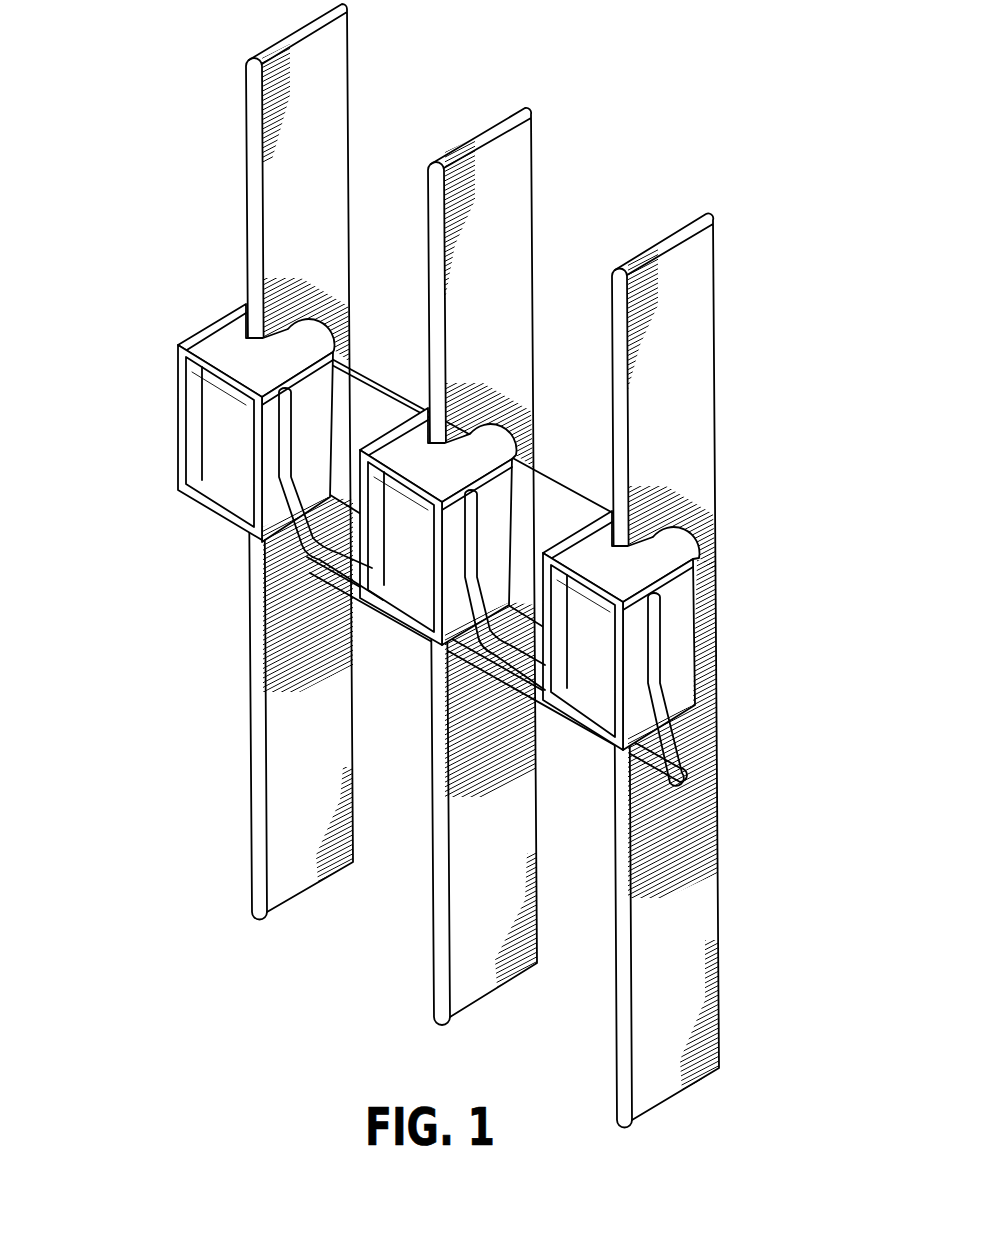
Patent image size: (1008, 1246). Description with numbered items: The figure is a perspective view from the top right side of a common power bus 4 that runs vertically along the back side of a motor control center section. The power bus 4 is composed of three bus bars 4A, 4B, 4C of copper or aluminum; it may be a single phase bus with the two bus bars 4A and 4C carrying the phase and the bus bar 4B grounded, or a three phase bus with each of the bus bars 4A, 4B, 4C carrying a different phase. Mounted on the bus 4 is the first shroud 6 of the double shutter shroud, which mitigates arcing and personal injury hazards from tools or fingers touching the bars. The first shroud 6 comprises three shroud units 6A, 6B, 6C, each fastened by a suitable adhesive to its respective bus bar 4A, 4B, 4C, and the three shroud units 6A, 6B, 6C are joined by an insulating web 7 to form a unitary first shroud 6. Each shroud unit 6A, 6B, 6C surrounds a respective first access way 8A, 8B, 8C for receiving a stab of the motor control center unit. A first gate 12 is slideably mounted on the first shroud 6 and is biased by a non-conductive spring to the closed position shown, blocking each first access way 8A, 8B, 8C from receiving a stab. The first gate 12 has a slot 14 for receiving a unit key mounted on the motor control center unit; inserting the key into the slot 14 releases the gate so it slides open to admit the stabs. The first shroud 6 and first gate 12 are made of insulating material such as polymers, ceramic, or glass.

The power bus 4 is at (485, 566).
The bus bar 4A is at (260, 722).
The bus bar 4B is at (487, 168).
The bus bar 4C is at (697, 403).
The first shroud 6 is at (468, 467).
The first shroud unit 6A is at (207, 352).
The first shroud unit 6B is at (419, 433).
The first shroud unit 6C is at (678, 605).
The insulating web 7 is at (361, 437).
The first access way 8A is at (192, 455).
The first access way 8B is at (373, 547).
The first access way 8C is at (555, 660).
The first gate 12 is at (220, 418).
The slot 14 is at (485, 663).